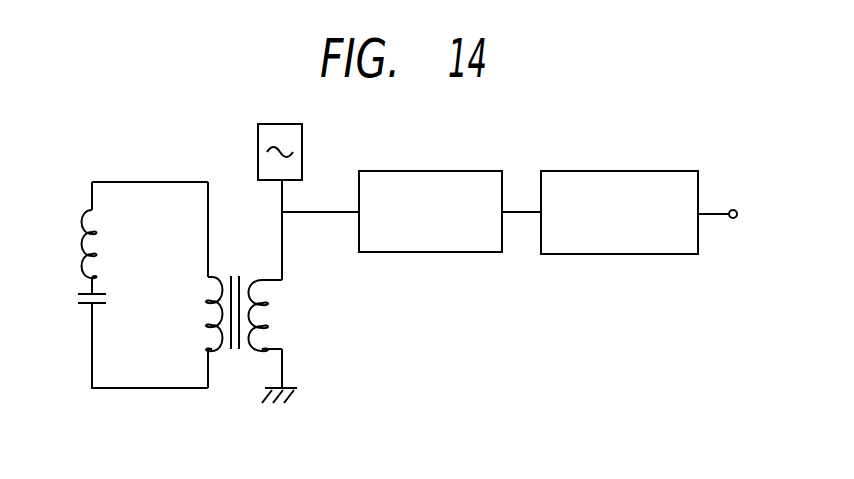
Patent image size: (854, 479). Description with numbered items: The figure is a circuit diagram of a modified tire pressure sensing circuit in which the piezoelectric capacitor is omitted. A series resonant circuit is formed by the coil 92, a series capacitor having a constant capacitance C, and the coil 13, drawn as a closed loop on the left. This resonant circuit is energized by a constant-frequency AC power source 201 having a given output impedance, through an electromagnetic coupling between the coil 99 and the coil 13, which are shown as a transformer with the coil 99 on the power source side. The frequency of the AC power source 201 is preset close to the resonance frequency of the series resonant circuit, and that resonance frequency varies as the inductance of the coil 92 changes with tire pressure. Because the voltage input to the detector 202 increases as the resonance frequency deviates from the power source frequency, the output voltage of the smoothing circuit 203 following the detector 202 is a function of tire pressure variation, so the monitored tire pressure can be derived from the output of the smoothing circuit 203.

The constant capacitance C is at (75, 302).
The coil 92 is at (103, 243).
The coil 13 is at (197, 313).
The coil 99 is at (273, 318).
The constant-frequency AC power source 201 is at (302, 137).
The detector 202 is at (478, 170).
The smoothing circuit 203 is at (670, 171).